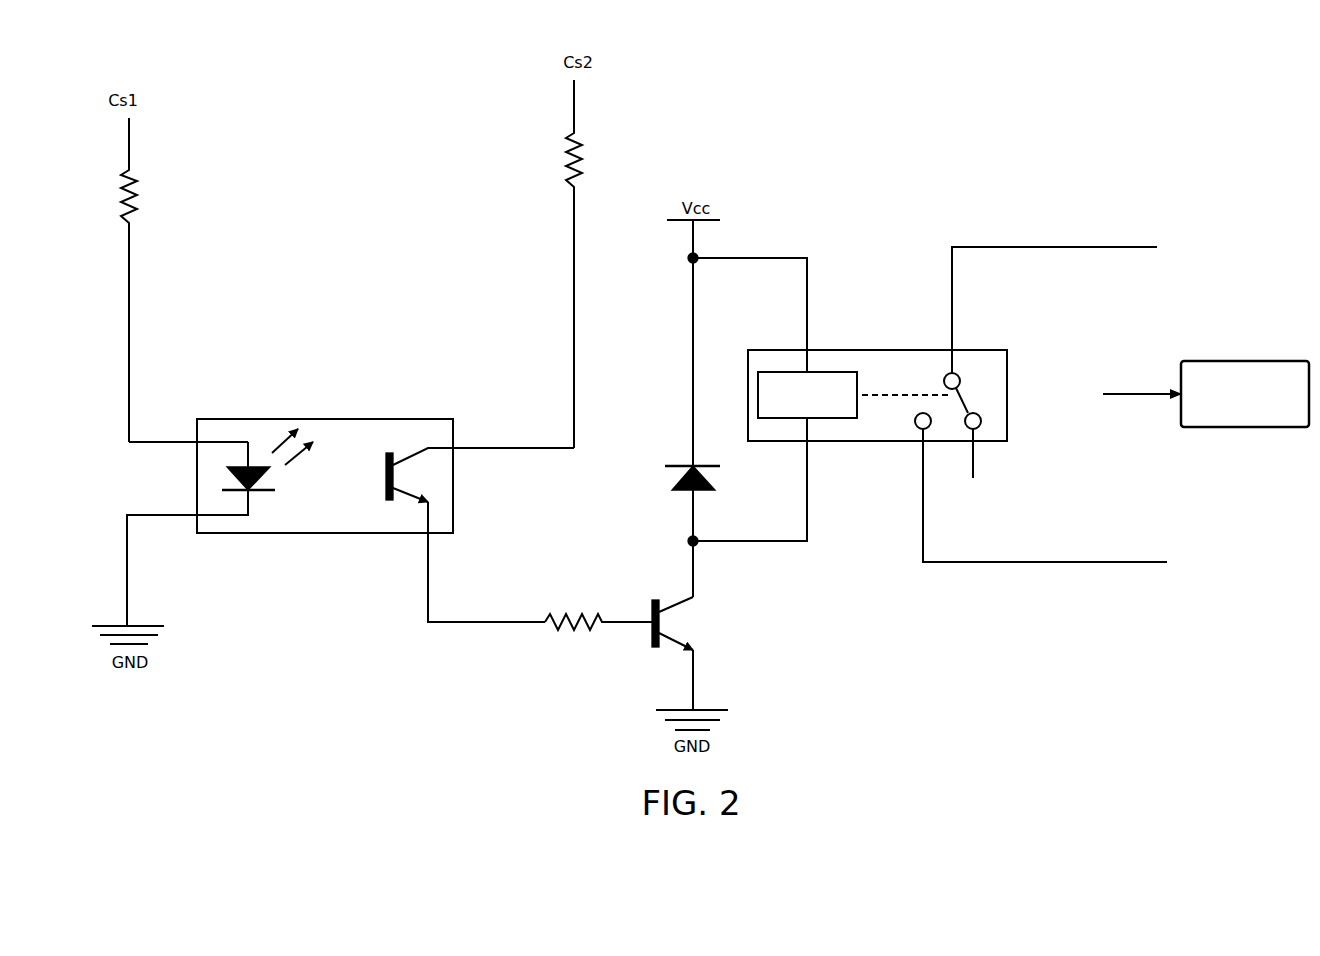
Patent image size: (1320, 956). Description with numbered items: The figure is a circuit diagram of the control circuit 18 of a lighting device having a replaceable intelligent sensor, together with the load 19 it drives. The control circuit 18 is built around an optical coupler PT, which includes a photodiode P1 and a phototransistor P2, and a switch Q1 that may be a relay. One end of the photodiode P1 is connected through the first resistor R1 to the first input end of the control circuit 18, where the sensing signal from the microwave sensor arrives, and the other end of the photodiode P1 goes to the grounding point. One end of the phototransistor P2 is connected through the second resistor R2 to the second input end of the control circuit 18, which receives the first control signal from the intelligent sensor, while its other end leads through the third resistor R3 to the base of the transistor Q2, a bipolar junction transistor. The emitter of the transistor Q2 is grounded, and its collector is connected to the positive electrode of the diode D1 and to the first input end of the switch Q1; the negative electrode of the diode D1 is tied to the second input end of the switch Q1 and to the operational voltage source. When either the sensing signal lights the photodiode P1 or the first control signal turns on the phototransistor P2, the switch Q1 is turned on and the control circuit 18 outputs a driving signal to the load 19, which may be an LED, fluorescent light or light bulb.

The control circuit 18 is at (858, 148).
The load 19 is at (1225, 361).
The first resistor R1 is at (144, 280).
The second resistor R2 is at (589, 264).
The third resistor R3 is at (598, 608).
The optical coupler PT is at (274, 419).
The photodiode P1 is at (220, 527).
The phototransistor P2 is at (465, 535).
The diode D1 is at (678, 531).
The switch Q1 is at (880, 350).
The transistor Q2 is at (688, 653).